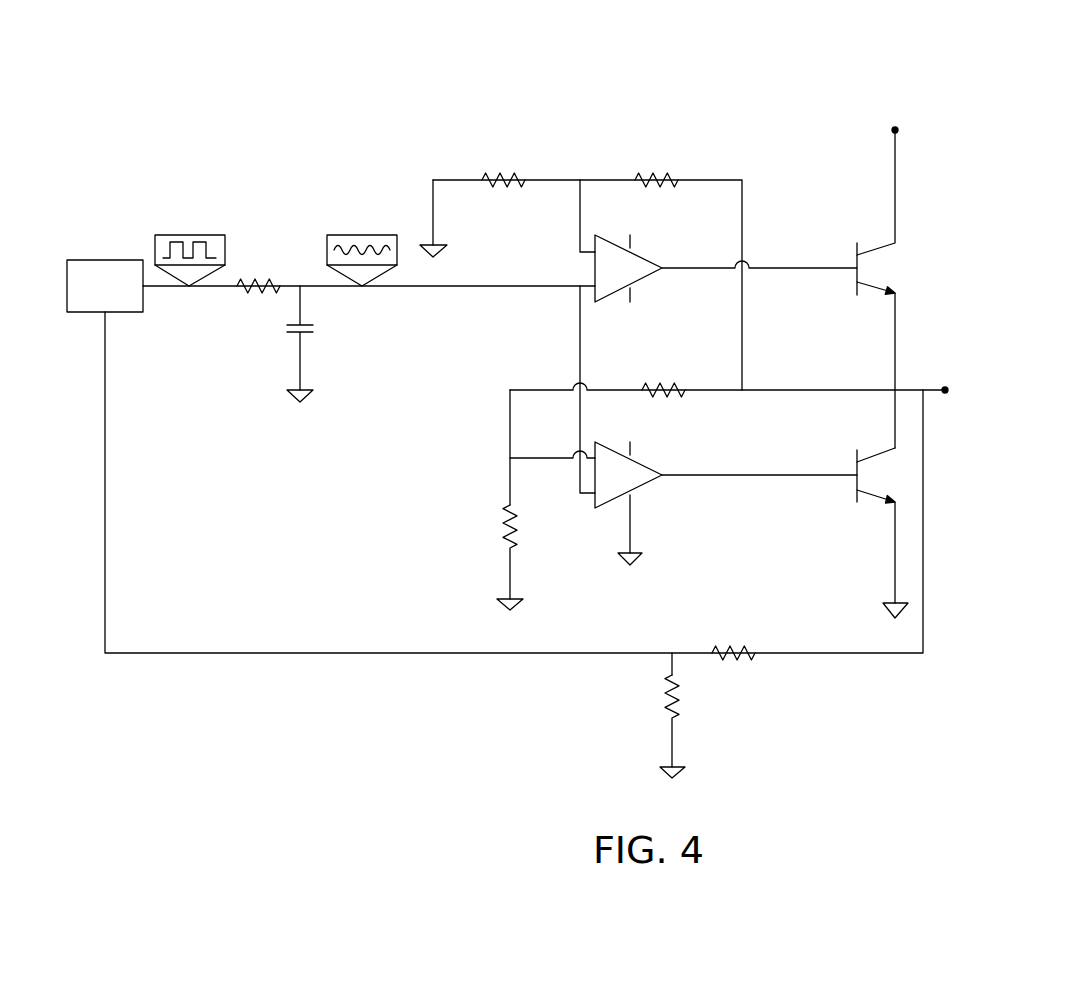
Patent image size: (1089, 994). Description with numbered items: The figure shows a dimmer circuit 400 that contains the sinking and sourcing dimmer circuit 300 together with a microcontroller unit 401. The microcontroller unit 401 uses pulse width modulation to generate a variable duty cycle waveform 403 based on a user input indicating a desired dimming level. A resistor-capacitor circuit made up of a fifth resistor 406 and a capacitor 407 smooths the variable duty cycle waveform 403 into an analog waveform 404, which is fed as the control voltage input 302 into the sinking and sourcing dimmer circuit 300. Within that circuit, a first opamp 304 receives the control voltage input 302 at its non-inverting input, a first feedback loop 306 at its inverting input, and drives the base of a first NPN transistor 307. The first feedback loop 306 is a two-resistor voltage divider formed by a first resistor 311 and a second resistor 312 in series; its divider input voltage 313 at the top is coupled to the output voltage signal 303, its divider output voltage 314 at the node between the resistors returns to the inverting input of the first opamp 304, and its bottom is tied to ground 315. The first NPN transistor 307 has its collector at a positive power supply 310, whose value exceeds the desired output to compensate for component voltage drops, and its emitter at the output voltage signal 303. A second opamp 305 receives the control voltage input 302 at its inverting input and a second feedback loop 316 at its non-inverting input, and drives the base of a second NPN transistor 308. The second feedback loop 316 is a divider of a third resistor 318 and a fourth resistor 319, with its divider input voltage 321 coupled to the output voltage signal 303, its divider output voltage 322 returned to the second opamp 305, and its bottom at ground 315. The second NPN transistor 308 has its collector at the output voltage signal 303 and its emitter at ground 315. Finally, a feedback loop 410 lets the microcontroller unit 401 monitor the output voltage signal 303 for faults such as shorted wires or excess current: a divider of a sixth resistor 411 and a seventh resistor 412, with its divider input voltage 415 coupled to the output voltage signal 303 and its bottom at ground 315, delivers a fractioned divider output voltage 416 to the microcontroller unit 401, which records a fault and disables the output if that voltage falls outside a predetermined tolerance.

The dimmer circuit 400 is at (228, 141).
The microcontroller unit 401 is at (105, 258).
The variable duty cycle waveform 403 is at (200, 234).
The analog waveform 404 is at (362, 234).
The fifth resistor 406 is at (262, 248).
The capacitor 407 is at (280, 340).
The control voltage input Vin 302 is at (365, 306).
The second resistor 312 is at (528, 170).
The output voltage Vdout of the first divider 314 is at (580, 170).
The first resistor 311 is at (683, 171).
The ground 315 is at (447, 250).
The first opamp 304 is at (645, 275).
The input voltage Vdin of the first divider 313 is at (742, 180).
The first feedback loop 306 is at (742, 238).
The positive power supply Vpos 310 is at (872, 120).
The sinking and sourcing dimmer circuit 300 is at (992, 239).
The first NPN transistor 307 is at (875, 290).
The second feedback loop 316 is at (533, 384).
The third resistor 318 is at (682, 392).
The output voltage Vdout of the second divider 322 is at (500, 460).
The fourth resistor 319 is at (525, 522).
The second opamp 305 is at (645, 487).
The input voltage Vdin of the second divider 321 is at (742, 392).
The output voltage signal Vout 303 is at (995, 392).
The second NPN transistor 308 is at (875, 502).
The feedback loop 410 is at (428, 656).
The output voltage Vdout of the monitoring divider 416 is at (672, 652).
The seventh resistor 412 is at (628, 695).
The sixth resistor 411 is at (733, 650).
The input voltage Vdin of the monitoring divider 415 is at (928, 656).